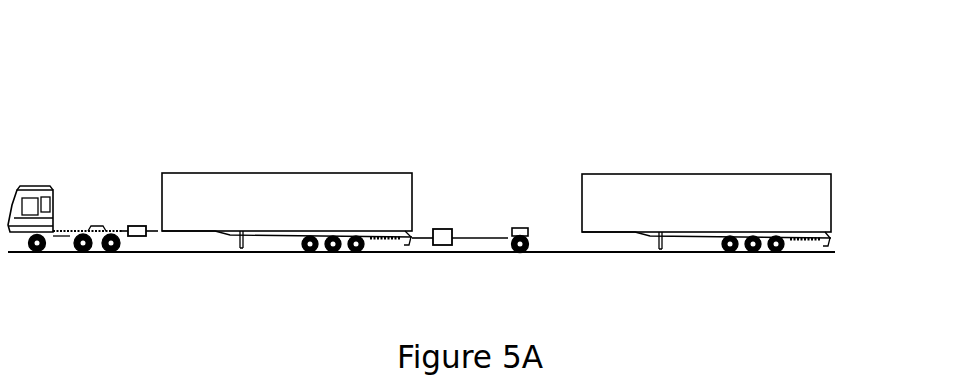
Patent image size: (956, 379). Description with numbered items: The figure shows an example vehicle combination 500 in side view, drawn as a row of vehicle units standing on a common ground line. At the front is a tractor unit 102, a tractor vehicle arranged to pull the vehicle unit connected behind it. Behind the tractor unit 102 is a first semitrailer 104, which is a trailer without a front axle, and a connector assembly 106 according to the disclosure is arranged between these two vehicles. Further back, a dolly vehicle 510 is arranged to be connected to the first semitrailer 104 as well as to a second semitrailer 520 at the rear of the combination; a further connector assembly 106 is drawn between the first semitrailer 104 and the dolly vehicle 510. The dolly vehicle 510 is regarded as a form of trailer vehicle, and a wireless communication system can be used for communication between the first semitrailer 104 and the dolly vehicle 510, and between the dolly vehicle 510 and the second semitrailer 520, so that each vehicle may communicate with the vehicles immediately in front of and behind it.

The vehicle combination 500 is at (112, 64).
The tractor unit 102 is at (33, 187).
The first semitrailer 104 is at (260, 173).
The connector assembly 106 is at (133, 221).
The dolly vehicle 510 is at (516, 226).
The second semitrailer 520 is at (687, 174).